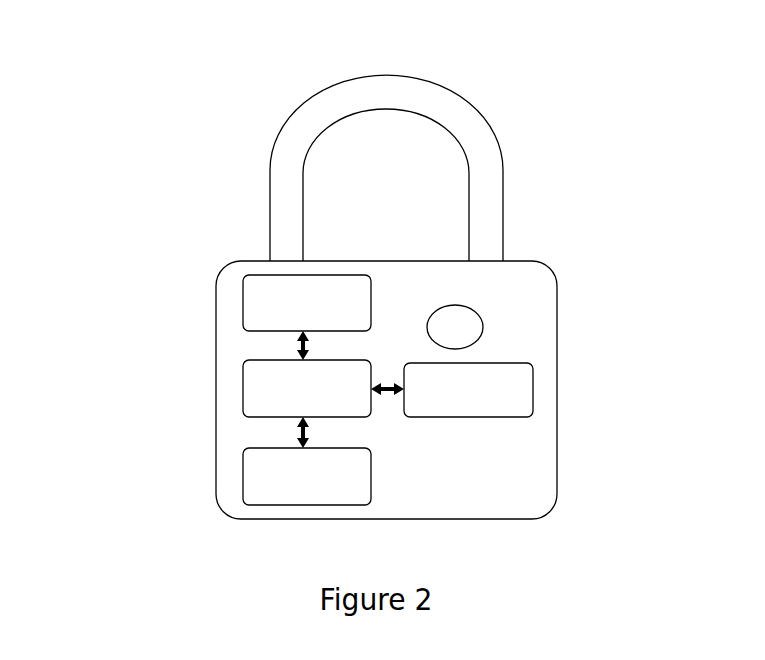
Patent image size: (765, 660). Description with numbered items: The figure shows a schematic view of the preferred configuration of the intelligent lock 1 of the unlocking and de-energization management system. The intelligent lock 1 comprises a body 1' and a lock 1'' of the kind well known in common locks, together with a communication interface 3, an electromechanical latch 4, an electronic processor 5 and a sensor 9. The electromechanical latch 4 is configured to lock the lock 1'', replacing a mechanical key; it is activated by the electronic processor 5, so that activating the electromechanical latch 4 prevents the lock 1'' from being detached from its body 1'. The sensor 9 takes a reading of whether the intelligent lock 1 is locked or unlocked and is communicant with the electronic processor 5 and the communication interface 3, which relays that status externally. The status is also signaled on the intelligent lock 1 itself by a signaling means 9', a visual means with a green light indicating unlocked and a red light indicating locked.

The intelligent lock 1 is at (341, 297).
The body 1' is at (336, 390).
The lock 1'' is at (431, 168).
The communication interface 3 is at (468, 390).
The electromechanical latch 4 is at (307, 303).
The electronic processor 5 is at (307, 388).
The sensor 9 is at (307, 476).
The signaling means 9' is at (455, 327).